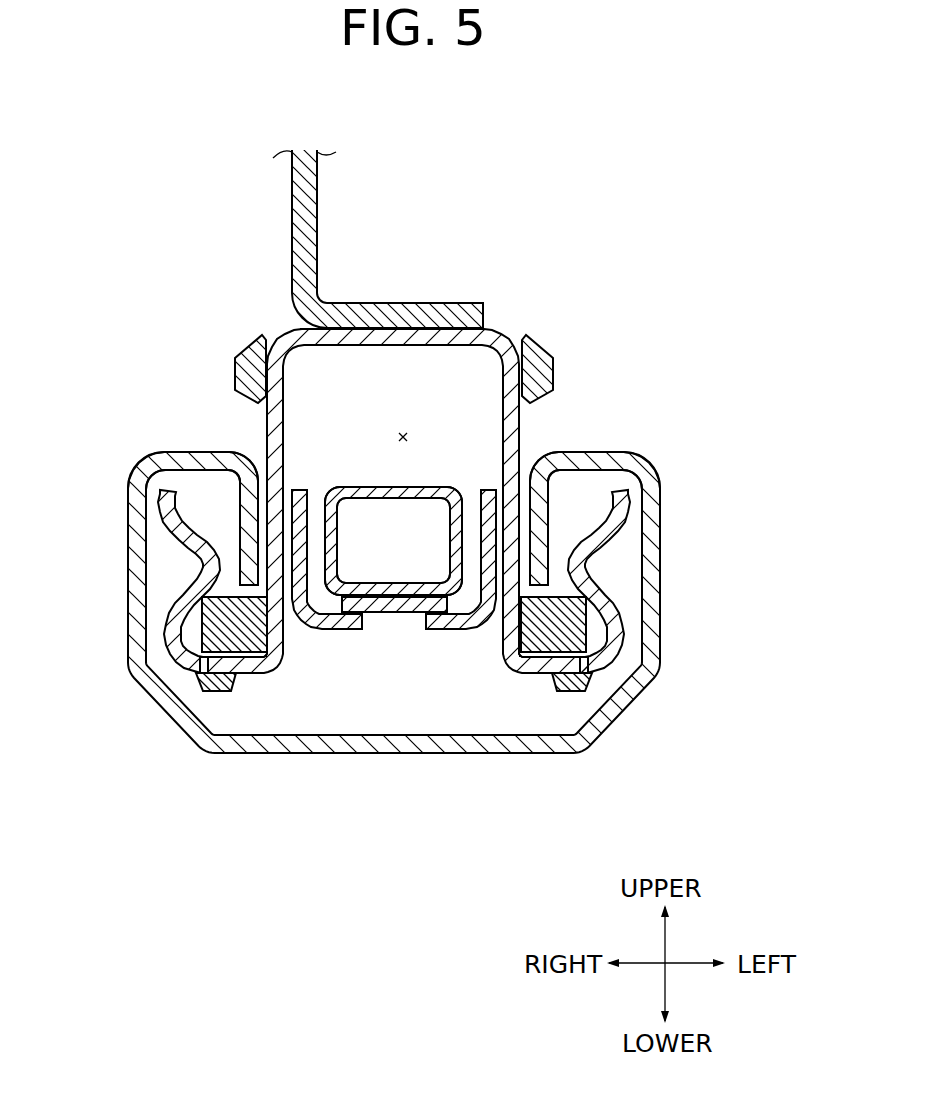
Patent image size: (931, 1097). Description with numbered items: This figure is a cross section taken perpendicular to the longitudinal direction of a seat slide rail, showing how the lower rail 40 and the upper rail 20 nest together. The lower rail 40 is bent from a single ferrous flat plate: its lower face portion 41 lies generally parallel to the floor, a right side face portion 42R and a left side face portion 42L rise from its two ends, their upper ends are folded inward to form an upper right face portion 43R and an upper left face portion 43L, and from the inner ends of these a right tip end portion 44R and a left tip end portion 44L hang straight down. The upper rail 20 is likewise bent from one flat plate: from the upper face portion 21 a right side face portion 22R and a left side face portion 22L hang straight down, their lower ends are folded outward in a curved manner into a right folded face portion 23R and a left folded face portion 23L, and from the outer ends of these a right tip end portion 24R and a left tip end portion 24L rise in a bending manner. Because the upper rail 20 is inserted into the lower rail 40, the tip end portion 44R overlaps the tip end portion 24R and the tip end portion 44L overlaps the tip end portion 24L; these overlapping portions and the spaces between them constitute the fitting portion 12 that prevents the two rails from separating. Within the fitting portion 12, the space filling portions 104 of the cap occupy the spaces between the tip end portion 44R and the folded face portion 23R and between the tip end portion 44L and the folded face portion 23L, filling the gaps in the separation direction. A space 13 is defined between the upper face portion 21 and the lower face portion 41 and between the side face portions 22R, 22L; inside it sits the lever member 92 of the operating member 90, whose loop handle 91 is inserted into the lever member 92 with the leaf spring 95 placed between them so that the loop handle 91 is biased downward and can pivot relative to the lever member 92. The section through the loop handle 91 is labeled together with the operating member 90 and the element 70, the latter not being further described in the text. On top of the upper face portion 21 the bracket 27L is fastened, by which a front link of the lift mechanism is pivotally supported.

The lower rail 40 is at (640, 707).
The lower face portion 41 is at (378, 747).
The right side face portion 42R is at (137, 607).
The left side face portion 42L is at (655, 600).
The upper right face portion 43R is at (182, 462).
The upper left face portion 43L is at (605, 460).
The right tip end portion 44R is at (248, 478).
The left tip end portion 44L is at (548, 465).
The right folded face portion 23R is at (220, 670).
The left folded face portion 23L is at (568, 662).
The space filling portion 104 is at (230, 632).
The fitting portion 12 is at (228, 532).
The upper rail 20 is at (509, 326).
The upper face portion 21 is at (380, 333).
The right side face portion 22R is at (283, 440).
The left side face portion 22L is at (503, 430).
The right tip end portion 24R is at (170, 517).
The left tip end portion 24L is at (617, 512).
The bracket 27L is at (305, 218).
The loop handle 91 is at (420, 490).
The operating member 90 is at (393, 541).
The cover member 70 is at (393, 540).
The space 13 is at (403, 432).
The leaf spring 95 is at (390, 605).
The lever member 92 is at (448, 622).